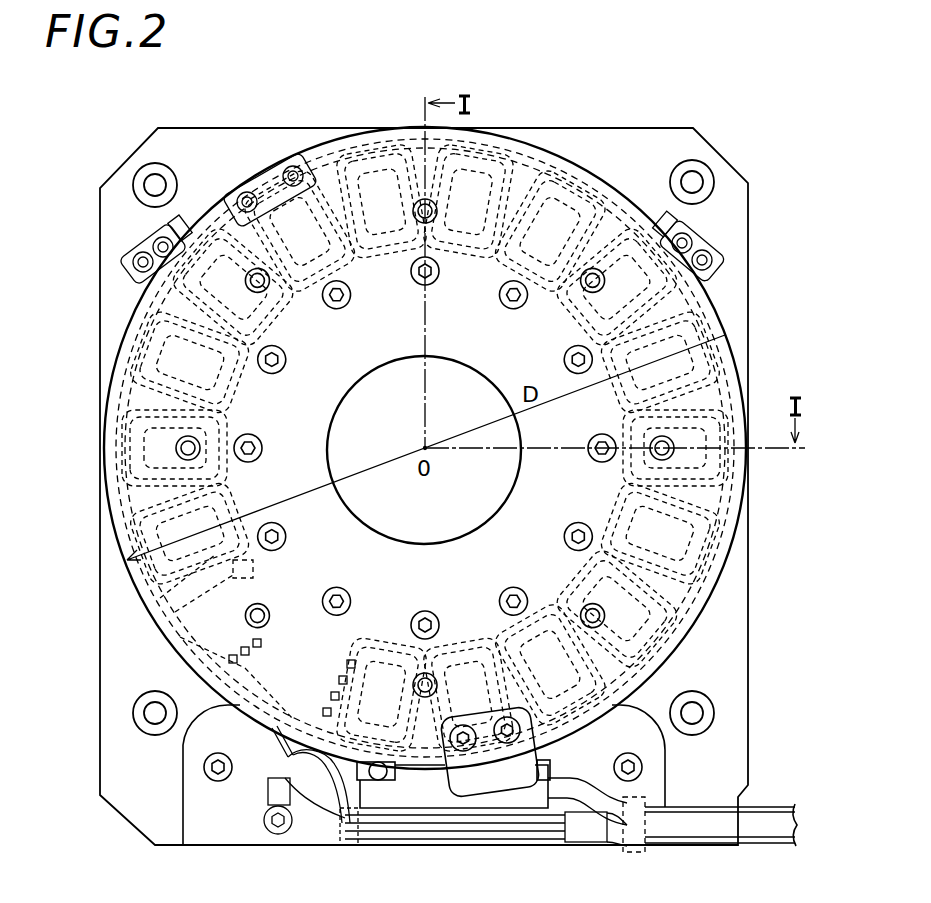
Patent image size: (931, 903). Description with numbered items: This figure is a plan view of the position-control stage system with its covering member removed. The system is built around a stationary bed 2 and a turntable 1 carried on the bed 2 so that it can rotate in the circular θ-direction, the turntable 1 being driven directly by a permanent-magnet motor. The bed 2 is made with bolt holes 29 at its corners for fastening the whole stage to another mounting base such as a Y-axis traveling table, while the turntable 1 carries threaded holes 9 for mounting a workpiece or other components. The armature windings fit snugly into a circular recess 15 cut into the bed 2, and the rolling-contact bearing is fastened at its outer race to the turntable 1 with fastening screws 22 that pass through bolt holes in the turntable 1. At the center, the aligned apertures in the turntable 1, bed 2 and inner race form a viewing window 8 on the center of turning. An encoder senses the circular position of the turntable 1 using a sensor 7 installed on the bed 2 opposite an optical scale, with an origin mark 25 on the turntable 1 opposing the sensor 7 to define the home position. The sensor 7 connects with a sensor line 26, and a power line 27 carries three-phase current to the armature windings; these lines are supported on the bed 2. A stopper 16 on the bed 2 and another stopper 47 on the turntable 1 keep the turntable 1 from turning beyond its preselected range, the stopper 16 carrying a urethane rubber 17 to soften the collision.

The turntable 1 is at (585, 490).
The stationary bed 2 is at (720, 672).
The sensor 7 is at (412, 795).
The viewing window 8 is at (380, 533).
The threaded holes 9 is at (596, 280).
The circular recess 15 is at (705, 605).
The stopper 16 is at (140, 252).
The urethane rubber 17 is at (185, 225).
The fastening screws 22 is at (516, 292).
The origin mark 25 is at (488, 790).
The sensor line 26 is at (765, 822).
The power line 27 is at (748, 845).
The bolt holes 29 is at (702, 180).
The stopper 47 is at (270, 185).